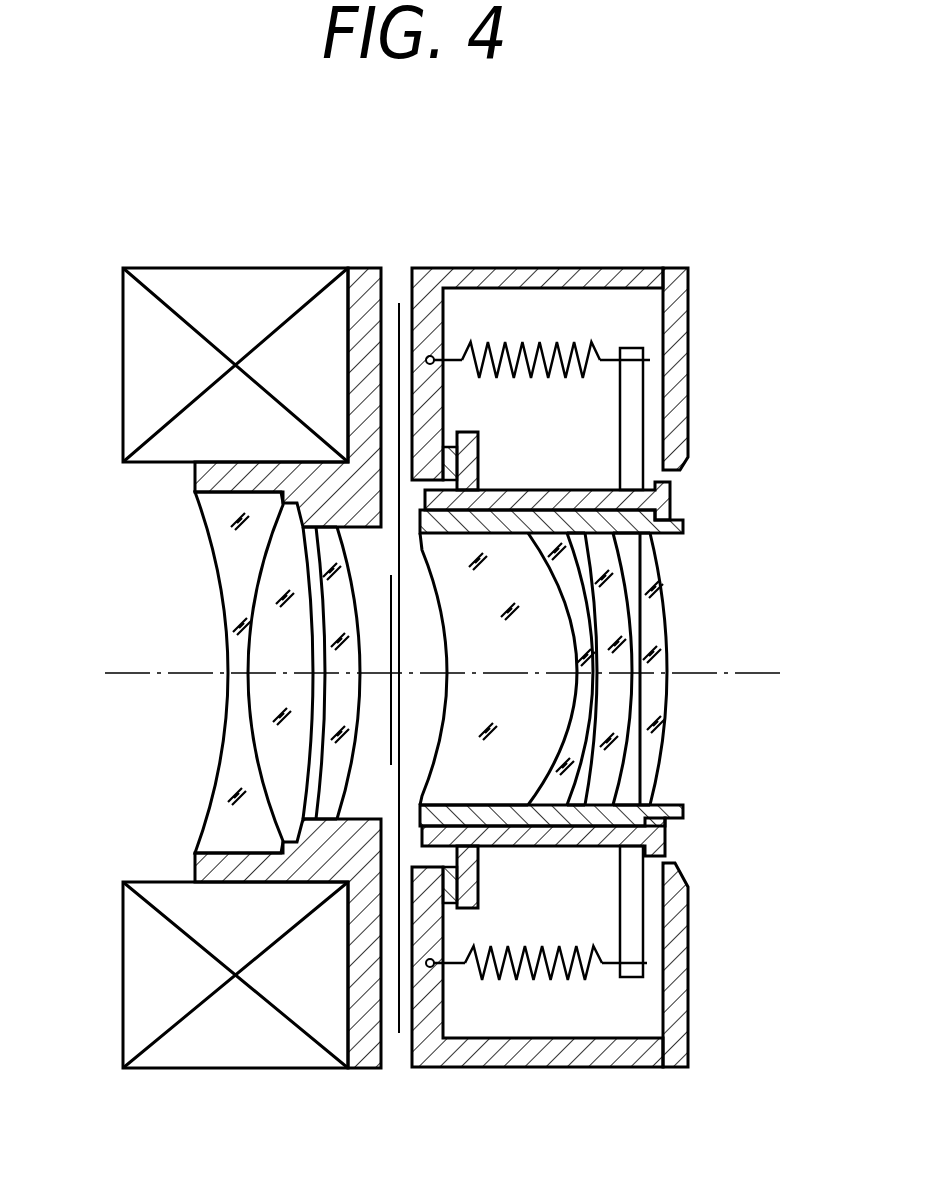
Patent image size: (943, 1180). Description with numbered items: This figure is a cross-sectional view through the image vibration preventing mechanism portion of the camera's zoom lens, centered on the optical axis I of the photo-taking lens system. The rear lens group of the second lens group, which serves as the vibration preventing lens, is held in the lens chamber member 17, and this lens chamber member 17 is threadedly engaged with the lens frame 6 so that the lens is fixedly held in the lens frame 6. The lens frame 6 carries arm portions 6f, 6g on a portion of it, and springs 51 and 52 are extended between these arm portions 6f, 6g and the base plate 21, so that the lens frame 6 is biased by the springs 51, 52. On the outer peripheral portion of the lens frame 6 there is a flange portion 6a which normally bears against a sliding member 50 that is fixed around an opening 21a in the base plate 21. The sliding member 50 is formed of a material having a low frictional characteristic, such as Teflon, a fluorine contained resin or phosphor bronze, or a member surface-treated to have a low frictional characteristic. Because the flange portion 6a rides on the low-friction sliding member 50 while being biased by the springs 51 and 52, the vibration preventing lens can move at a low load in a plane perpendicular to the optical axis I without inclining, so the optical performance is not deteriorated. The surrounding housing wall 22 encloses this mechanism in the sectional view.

The base plate 21 is at (430, 297).
The opening 21a is at (350, 440).
The housing wall / cover 22 is at (688, 328).
The sliding member 50 is at (445, 455).
The spring 51 is at (558, 977).
The spring 52 is at (540, 340).
The lens frame 6 is at (528, 490).
The flange portion 6a is at (480, 447).
The arm portion 6f is at (632, 915).
The arm portion 6g is at (632, 402).
The lens chamber member 17 is at (683, 523).
The optical axis I is at (116, 672).